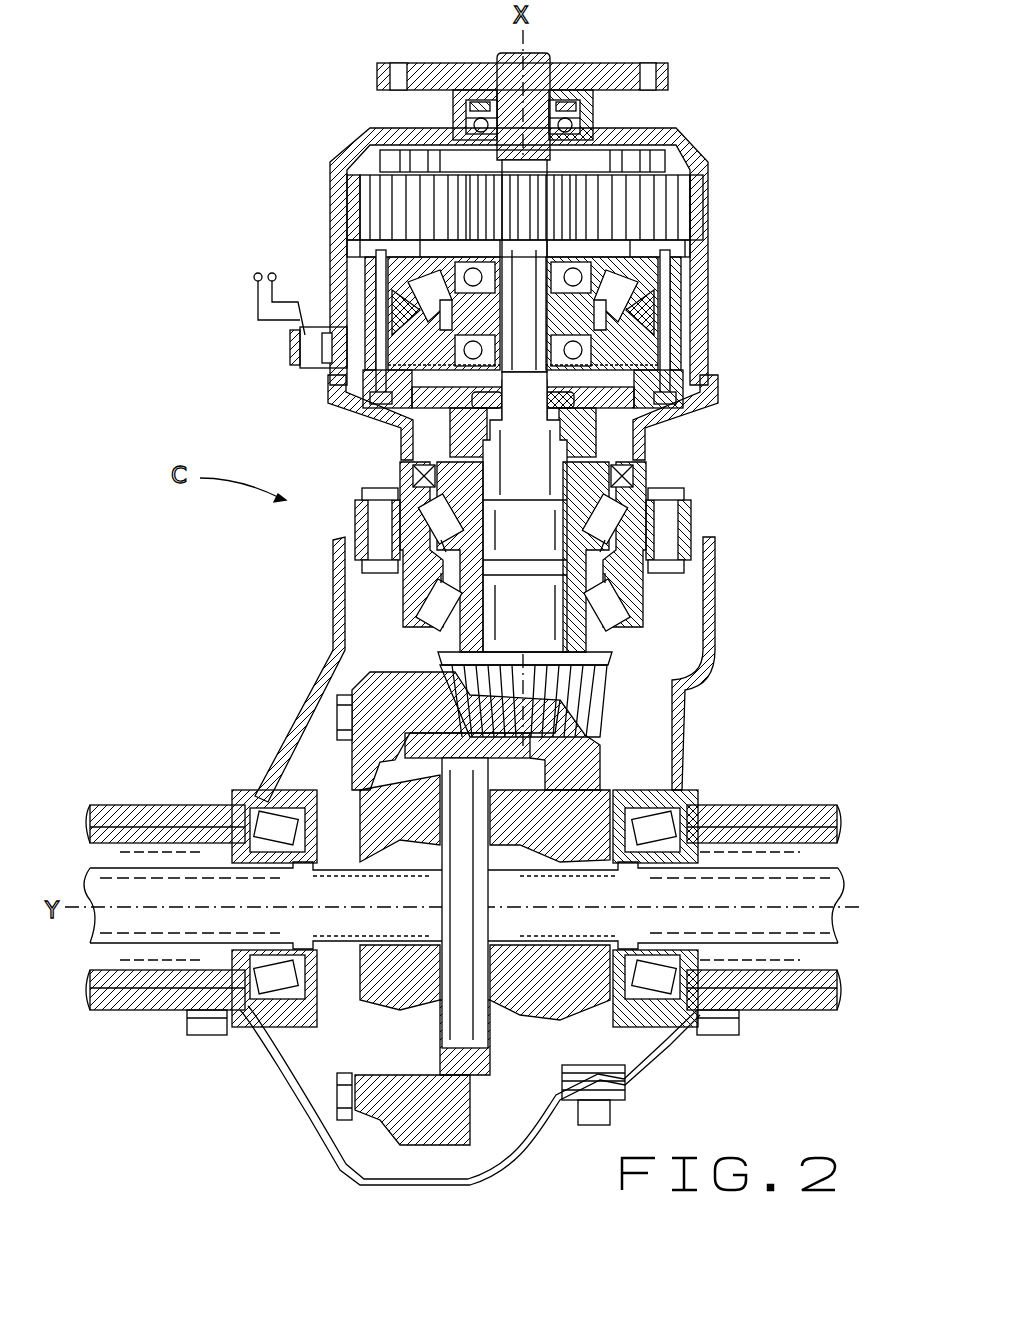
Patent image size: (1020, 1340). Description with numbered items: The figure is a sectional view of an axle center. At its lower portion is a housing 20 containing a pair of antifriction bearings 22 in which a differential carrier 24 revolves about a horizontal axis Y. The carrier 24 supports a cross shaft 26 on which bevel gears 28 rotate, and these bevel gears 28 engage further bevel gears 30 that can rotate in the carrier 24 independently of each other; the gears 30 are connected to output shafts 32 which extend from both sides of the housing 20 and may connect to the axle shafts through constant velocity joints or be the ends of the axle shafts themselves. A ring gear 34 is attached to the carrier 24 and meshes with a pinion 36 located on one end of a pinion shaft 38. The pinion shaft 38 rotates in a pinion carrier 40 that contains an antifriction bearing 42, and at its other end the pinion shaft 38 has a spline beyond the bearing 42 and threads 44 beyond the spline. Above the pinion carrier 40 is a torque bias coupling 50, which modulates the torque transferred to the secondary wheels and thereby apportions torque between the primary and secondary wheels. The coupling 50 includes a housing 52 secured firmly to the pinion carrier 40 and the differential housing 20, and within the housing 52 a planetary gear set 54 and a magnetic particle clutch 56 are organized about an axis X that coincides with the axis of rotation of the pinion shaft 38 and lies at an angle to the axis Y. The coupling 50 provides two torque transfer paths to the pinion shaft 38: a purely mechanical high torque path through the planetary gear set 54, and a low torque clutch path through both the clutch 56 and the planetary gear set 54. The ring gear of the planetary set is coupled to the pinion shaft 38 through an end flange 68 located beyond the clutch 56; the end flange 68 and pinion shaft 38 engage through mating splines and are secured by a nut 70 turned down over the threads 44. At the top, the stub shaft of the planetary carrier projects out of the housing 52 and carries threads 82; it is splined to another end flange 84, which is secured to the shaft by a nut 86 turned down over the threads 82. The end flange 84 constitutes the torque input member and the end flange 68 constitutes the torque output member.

The housing 20 is at (328, 640).
The antifriction bearings 22 is at (247, 800).
The differential carrier 24 is at (385, 1022).
The cross shaft 26 is at (478, 1050).
The bevel gears 28 is at (540, 792).
The bevel gears 30 is at (360, 1048).
The output shafts 32 is at (820, 872).
The ring gear 34 is at (425, 1118).
The pinion 36 is at (597, 700).
The pinion shaft 38 is at (505, 468).
The pinion carrier 40 is at (626, 590).
The antifriction bearing 42 is at (422, 590).
The threads 44 is at (600, 446).
The torque bias coupling 50 is at (298, 201).
The housing 52 is at (716, 310).
The planetary gear set 54 is at (670, 169).
The magnetic particle clutch 56 is at (690, 292).
The end flange 68 is at (397, 418).
The nut 70 is at (660, 422).
The threads 82 is at (553, 60).
The end flange 84 is at (604, 68).
The nut 86 is at (497, 63).